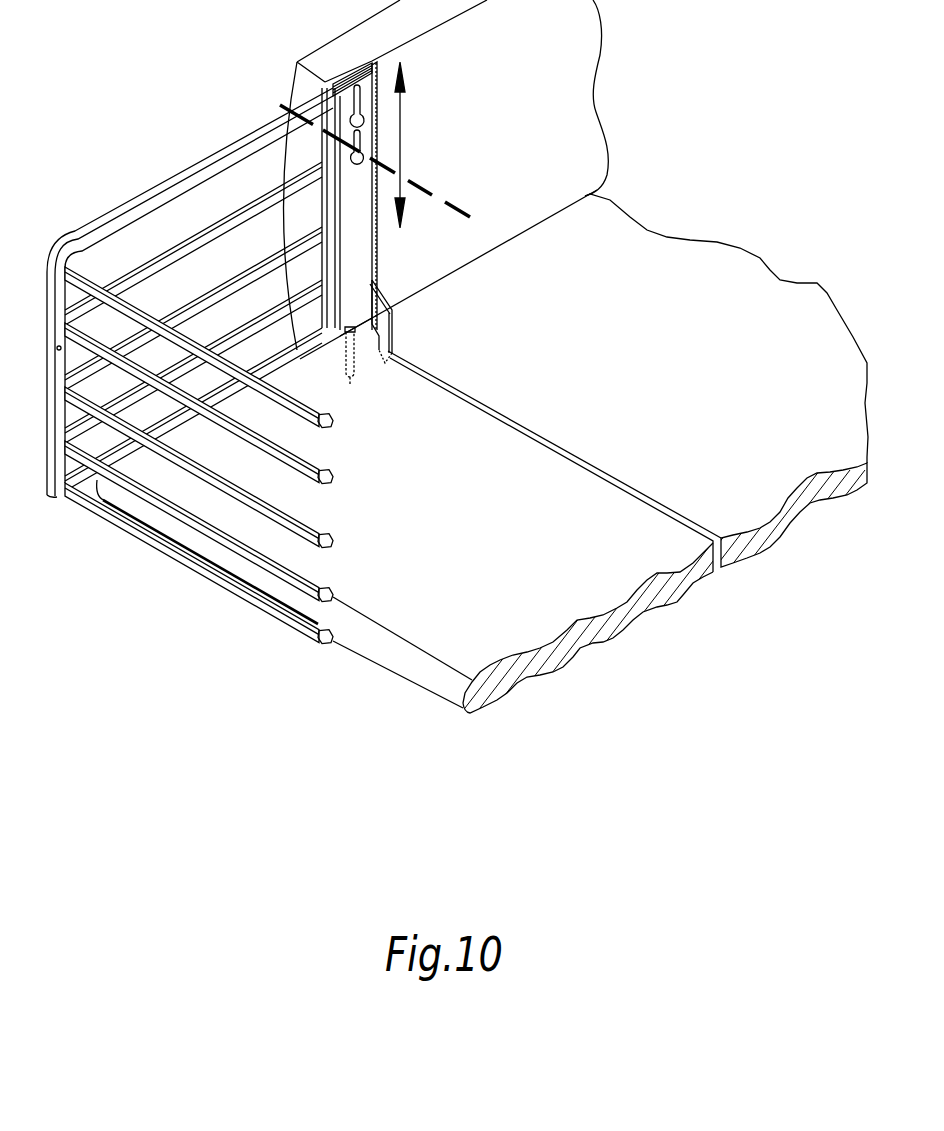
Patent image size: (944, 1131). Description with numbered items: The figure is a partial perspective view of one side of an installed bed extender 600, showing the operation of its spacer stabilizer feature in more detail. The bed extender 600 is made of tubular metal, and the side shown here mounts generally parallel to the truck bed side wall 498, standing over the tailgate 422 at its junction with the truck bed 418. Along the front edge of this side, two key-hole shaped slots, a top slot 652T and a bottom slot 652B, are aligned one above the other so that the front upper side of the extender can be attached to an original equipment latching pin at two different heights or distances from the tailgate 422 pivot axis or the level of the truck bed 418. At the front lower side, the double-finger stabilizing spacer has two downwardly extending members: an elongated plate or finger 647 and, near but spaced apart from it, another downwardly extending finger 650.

The bed extender 600 is at (184, 165).
The truck bed side wall 498 is at (554, 100).
The truck bed 418 is at (622, 350).
The tailgate 422 is at (484, 546).
The elongated plate or finger 647 is at (394, 326).
The downwardly extending finger 650 is at (352, 382).
The top key-hole shaped slot 652T is at (362, 108).
The bottom key-hole shaped slot 652B is at (362, 144).